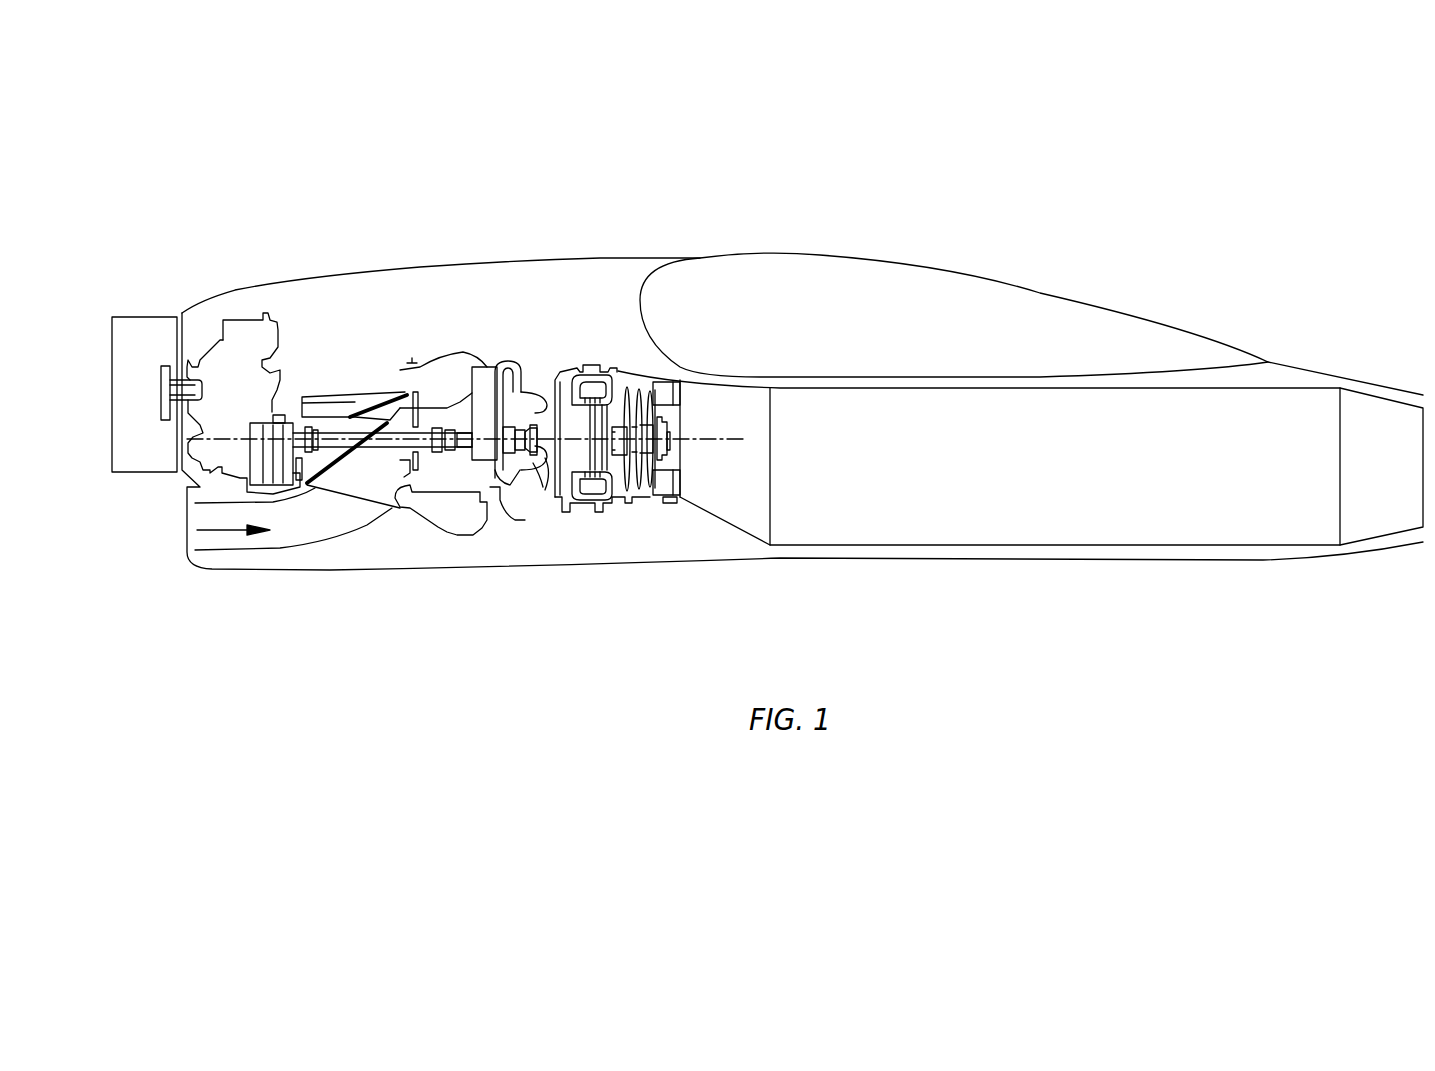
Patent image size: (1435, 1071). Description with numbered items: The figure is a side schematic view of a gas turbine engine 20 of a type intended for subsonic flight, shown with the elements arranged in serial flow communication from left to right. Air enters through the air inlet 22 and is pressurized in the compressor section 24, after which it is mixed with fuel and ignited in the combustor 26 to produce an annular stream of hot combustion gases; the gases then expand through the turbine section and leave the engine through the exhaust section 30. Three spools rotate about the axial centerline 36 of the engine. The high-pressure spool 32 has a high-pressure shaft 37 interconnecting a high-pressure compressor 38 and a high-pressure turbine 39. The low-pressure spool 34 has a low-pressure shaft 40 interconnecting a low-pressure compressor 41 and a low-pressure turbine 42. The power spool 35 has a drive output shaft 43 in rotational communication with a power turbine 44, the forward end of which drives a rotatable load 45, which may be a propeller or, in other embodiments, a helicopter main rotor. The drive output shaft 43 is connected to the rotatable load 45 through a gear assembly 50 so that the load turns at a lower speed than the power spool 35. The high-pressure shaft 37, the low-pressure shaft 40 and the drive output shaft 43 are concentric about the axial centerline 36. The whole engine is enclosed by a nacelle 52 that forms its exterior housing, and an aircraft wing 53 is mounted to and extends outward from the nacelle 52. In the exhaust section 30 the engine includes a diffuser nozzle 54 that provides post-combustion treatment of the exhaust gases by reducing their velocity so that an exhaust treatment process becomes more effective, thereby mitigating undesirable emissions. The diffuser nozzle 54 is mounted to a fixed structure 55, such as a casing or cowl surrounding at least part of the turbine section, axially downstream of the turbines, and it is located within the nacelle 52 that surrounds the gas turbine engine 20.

The gas turbine engine 20 is at (569, 293).
The air inlet 22 is at (313, 533).
The compressor section 24 is at (508, 345).
The combustor 26 is at (593, 490).
The exhaust section 30 is at (605, 354).
The high-pressure spool 32 is at (567, 419).
The low-pressure spool 34 is at (520, 395).
The power spool 35 is at (620, 417).
The axial centerline 36 is at (725, 441).
The high-pressure shaft 37 is at (548, 465).
The high-pressure compressor 38 is at (507, 500).
The high-pressure turbine 39 is at (580, 494).
The low-pressure shaft 40 is at (495, 478).
The low-pressure compressor 41 is at (510, 414).
The low-pressure turbine 42 is at (626, 486).
The drive output shaft 43 is at (340, 437).
The power turbine 44 is at (641, 484).
The rotatable load 45 is at (143, 317).
The gear assembly 50 is at (273, 416).
The nacelle 52 is at (398, 265).
The aircraft wing 53 is at (898, 299).
The diffuser nozzle 54 is at (1015, 520).
The fixed structure 55 is at (674, 384).